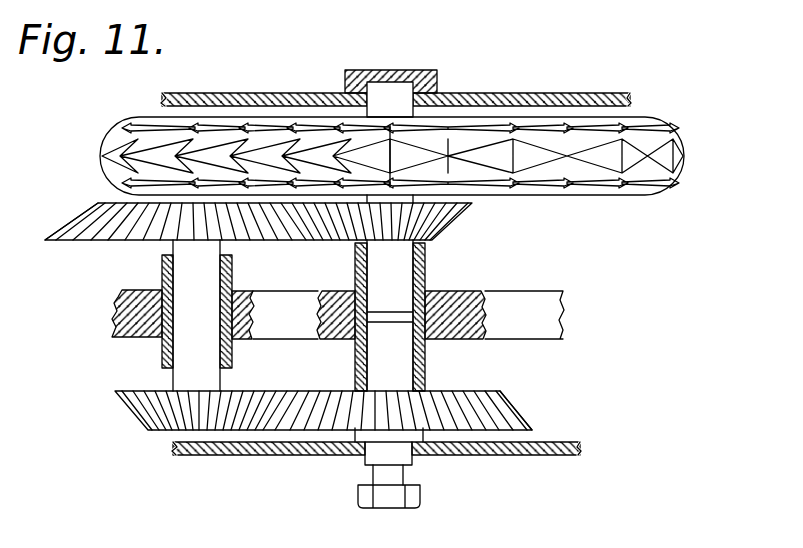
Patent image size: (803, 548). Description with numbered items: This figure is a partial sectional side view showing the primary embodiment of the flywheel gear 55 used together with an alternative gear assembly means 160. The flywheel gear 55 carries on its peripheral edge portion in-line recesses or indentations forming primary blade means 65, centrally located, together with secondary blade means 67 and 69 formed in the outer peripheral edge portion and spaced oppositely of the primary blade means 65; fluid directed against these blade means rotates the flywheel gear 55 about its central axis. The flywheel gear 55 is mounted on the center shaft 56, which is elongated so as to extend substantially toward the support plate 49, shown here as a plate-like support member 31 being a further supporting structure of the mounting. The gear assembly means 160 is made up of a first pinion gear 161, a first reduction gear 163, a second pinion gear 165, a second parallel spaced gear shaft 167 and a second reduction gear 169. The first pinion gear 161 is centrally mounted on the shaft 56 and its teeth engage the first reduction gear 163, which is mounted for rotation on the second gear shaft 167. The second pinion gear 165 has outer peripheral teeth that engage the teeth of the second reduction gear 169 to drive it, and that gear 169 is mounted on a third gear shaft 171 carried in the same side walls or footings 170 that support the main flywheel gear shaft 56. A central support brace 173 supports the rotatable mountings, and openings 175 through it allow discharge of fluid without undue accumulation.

The bottom support plate 31 is at (473, 455).
The support plate 49 is at (274, 97).
The flywheel gear 55 is at (677, 134).
The center shaft 56 is at (389, 84).
The primary blade means 65 is at (148, 152).
The secondary blade means 67 is at (175, 127).
The secondary blade means 69 is at (612, 186).
The gear assembly means 160 is at (468, 284).
The first pinion gear 161 is at (443, 222).
The first reduction gear 163 is at (90, 208).
The second pinion gear 165 is at (140, 413).
The second gear shaft 167 is at (187, 353).
The second reduction gear 169 is at (502, 402).
The side walls or footings 170 is at (366, 365).
The third gear shaft 171 is at (407, 370).
The central support brace 173 is at (127, 308).
The openings 175 is at (317, 305).